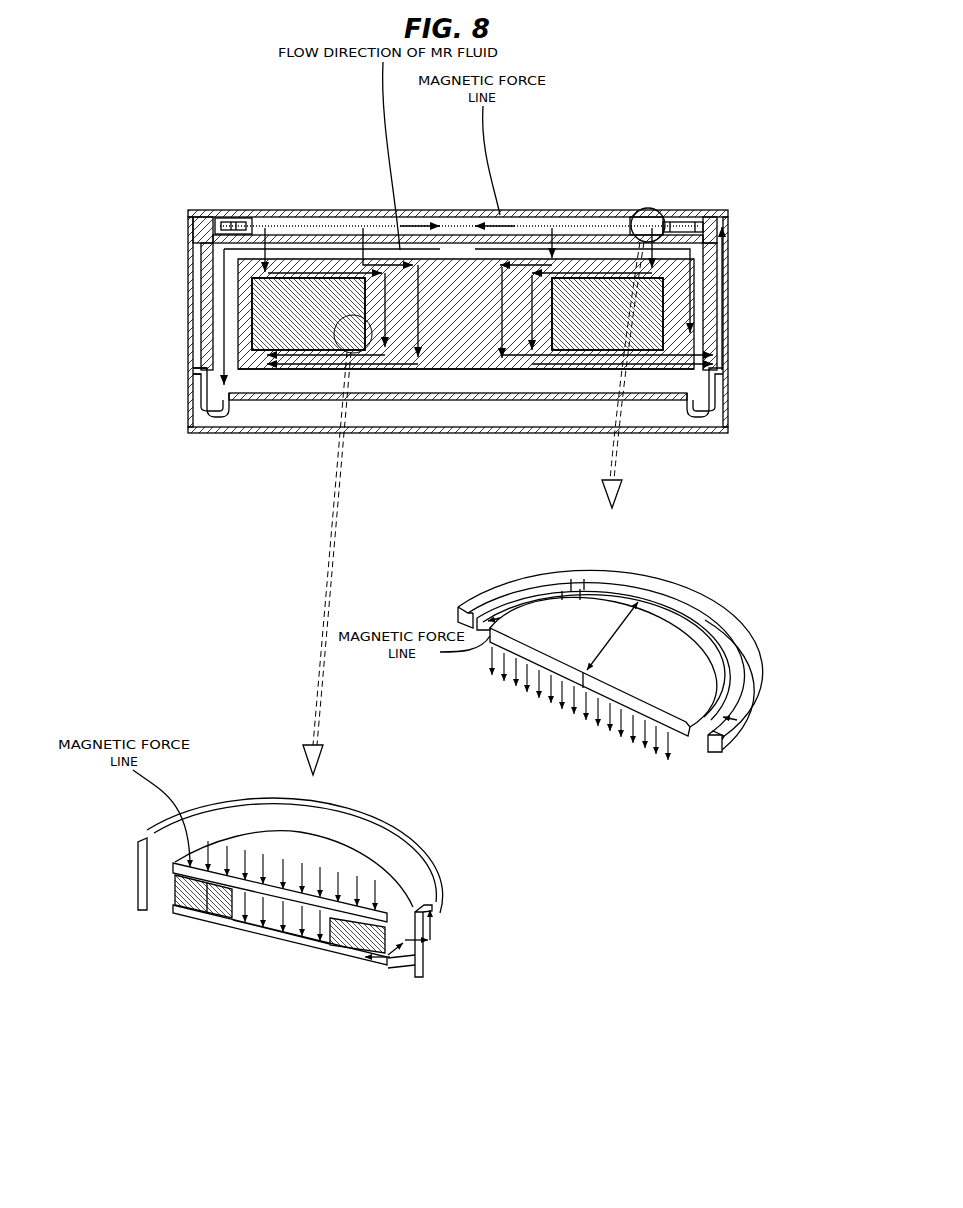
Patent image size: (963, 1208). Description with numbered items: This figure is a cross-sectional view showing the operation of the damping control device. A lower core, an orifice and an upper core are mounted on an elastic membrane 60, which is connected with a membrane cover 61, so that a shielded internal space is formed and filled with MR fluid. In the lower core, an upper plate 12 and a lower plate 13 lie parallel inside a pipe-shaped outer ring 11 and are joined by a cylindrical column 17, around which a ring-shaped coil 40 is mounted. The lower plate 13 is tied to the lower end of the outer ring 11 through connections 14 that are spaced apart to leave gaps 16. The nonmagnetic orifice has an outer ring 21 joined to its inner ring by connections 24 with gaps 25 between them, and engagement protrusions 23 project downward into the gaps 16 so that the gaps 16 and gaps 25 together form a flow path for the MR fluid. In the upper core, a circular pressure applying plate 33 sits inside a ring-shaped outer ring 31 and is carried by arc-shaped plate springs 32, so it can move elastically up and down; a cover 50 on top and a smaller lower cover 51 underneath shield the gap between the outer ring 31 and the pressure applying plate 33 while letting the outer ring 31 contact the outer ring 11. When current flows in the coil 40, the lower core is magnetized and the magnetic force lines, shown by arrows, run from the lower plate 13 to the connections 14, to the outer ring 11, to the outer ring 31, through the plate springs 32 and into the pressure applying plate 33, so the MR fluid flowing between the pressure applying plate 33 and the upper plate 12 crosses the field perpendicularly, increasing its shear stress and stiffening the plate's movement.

The outer ring 11 is at (205, 290).
The upper plate 12 is at (580, 262).
The lower plate 13 is at (568, 367).
The connection 14 is at (700, 382).
The gap 16 is at (417, 906).
The cylindrical column 17 is at (467, 325).
The outer ring 21 is at (200, 240).
The engagement protrusion 23 is at (250, 372).
The connection 24 is at (695, 342).
The gap 25 is at (200, 372).
The outer ring 31 is at (185, 222).
The plate spring 32 is at (230, 220).
The pressure applying plate 33 is at (332, 240).
The coil 40 is at (595, 292).
The cover 50 is at (277, 212).
The lower cover 51 is at (302, 235).
The membrane 60 is at (398, 400).
The membrane cover 61 is at (478, 430).